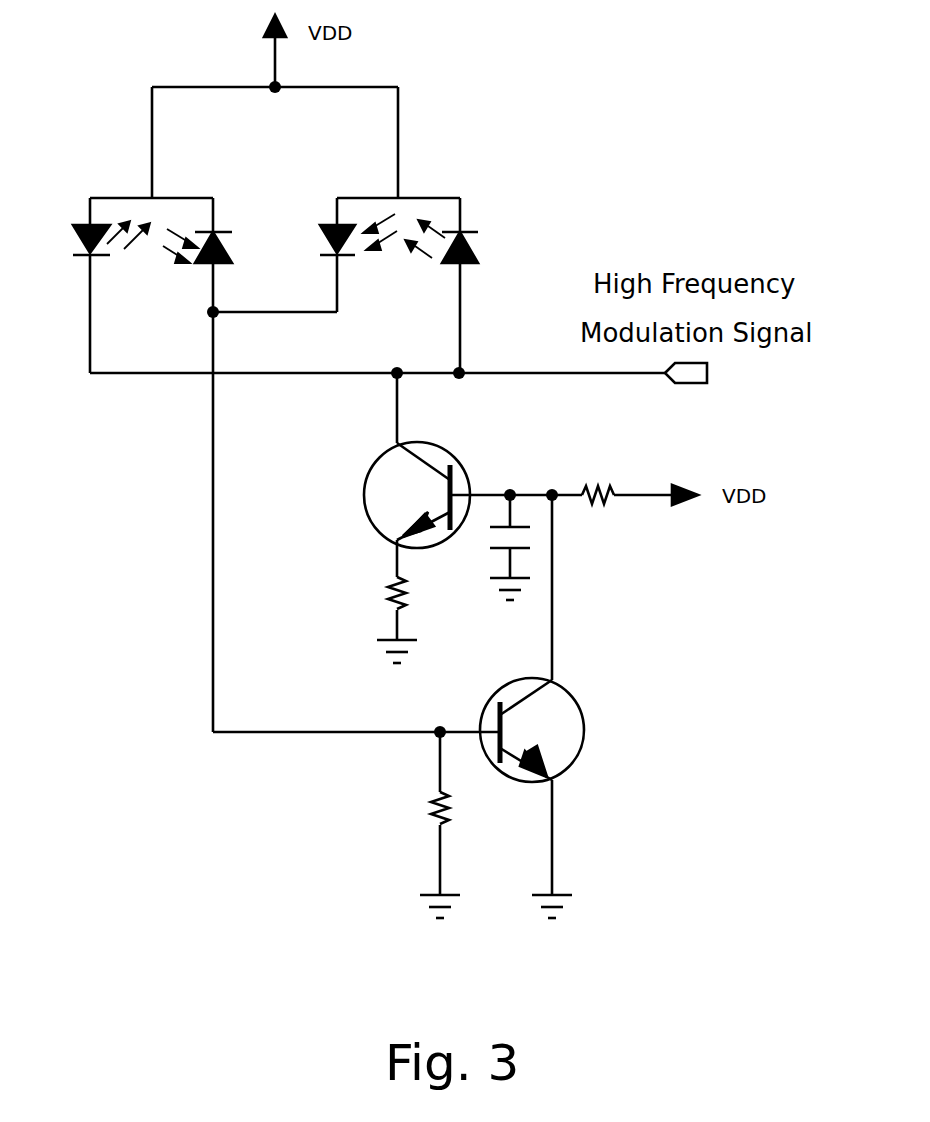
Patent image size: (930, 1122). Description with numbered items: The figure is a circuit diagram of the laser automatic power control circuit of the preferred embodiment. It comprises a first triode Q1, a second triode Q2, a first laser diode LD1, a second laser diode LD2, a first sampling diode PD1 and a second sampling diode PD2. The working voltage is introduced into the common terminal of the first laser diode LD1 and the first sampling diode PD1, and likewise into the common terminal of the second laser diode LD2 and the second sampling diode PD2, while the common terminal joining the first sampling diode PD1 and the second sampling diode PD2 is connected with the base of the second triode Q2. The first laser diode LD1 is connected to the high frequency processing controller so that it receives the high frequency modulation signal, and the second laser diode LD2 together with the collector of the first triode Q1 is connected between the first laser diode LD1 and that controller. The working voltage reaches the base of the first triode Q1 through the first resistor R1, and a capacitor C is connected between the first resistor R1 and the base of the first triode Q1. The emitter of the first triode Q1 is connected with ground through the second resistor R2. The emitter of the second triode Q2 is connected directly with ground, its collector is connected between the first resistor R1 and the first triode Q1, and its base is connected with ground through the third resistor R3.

The first laser diode LD1 is at (93, 285).
The first sampling diode PD1 is at (214, 465).
The second sampling diode PD2 is at (305, 255).
The second laser diode LD2 is at (473, 285).
The first triode Q1 is at (396, 475).
The second triode Q2 is at (546, 706).
The first resistor R1 is at (640, 479).
The second resistor R2 is at (378, 620).
The third resistor R3 is at (416, 825).
The capacitor C is at (495, 547).